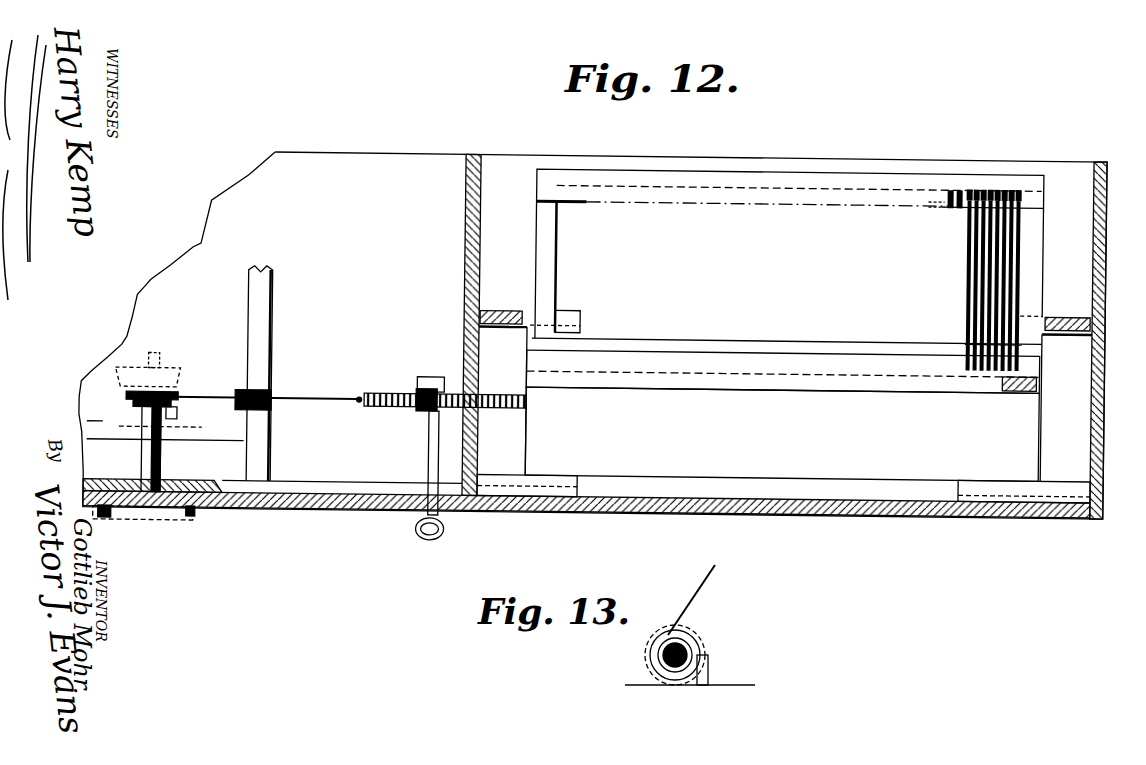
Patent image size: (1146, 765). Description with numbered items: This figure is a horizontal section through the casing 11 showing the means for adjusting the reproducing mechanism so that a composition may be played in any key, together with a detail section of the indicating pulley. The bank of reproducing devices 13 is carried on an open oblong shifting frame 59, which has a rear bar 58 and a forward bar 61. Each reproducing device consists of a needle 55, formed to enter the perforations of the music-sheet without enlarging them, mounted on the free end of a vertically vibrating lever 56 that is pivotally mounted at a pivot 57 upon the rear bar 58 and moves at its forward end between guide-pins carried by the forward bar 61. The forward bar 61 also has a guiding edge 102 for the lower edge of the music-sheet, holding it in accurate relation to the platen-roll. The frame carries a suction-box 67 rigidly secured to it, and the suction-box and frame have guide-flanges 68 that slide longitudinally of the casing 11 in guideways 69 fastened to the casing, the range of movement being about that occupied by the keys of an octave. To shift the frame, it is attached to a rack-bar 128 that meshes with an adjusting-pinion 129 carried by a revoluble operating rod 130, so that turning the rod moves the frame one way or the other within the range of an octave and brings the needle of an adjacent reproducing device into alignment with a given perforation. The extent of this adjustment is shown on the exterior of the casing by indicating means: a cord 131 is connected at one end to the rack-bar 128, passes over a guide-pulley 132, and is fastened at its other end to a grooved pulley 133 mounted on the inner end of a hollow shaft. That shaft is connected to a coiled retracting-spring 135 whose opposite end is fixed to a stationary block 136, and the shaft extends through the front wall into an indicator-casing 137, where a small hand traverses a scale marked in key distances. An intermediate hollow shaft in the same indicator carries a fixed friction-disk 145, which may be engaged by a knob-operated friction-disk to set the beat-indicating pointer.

In FIG. 12, the casing 11 is at (662, 507).
In FIG. 12, the bank of reproducing devices 13 is at (165, 428).
In FIG. 12, the needle 55 is at (968, 338).
In FIG. 12, the vibrating lever 56 is at (968, 260).
In FIG. 12, the pivot 57 is at (948, 208).
In FIG. 12, the rear bar 58 is at (752, 174).
In FIG. 12, the shifting frame 59 is at (553, 274).
In FIG. 12, the forward bar 61 is at (733, 367).
In FIG. 12, the suction-box 67 is at (782, 434).
In FIG. 12, the guide-flanges 68 is at (1055, 452).
In FIG. 12, the guideways 69 is at (498, 312).
In FIG. 12, the guiding edge 102 is at (783, 355).
In FIG. 12, the rack-bar 128 is at (392, 384).
In FIG. 12, the adjusting-pinion 129 is at (425, 414).
In FIG. 12, the operating rod 130 is at (430, 464).
In FIG. 12, the cord 131 is at (242, 416).
In FIG. 13, the cord 131 is at (686, 599).
In FIG. 12, the guide-pulley 132 is at (262, 400).
In FIG. 12, the grooved pulley 133 is at (172, 376).
In FIG. 13, the grooved pulley 133 is at (700, 641).
In FIG. 13, the coiled retracting-spring 135 is at (663, 655).
In FIG. 12, the stationary block 136 is at (127, 398).
In FIG. 13, the stationary block 136 is at (708, 668).
In FIG. 12, the indicator-casing 137 is at (162, 452).
In FIG. 12, the friction-disk 145 is at (178, 343).